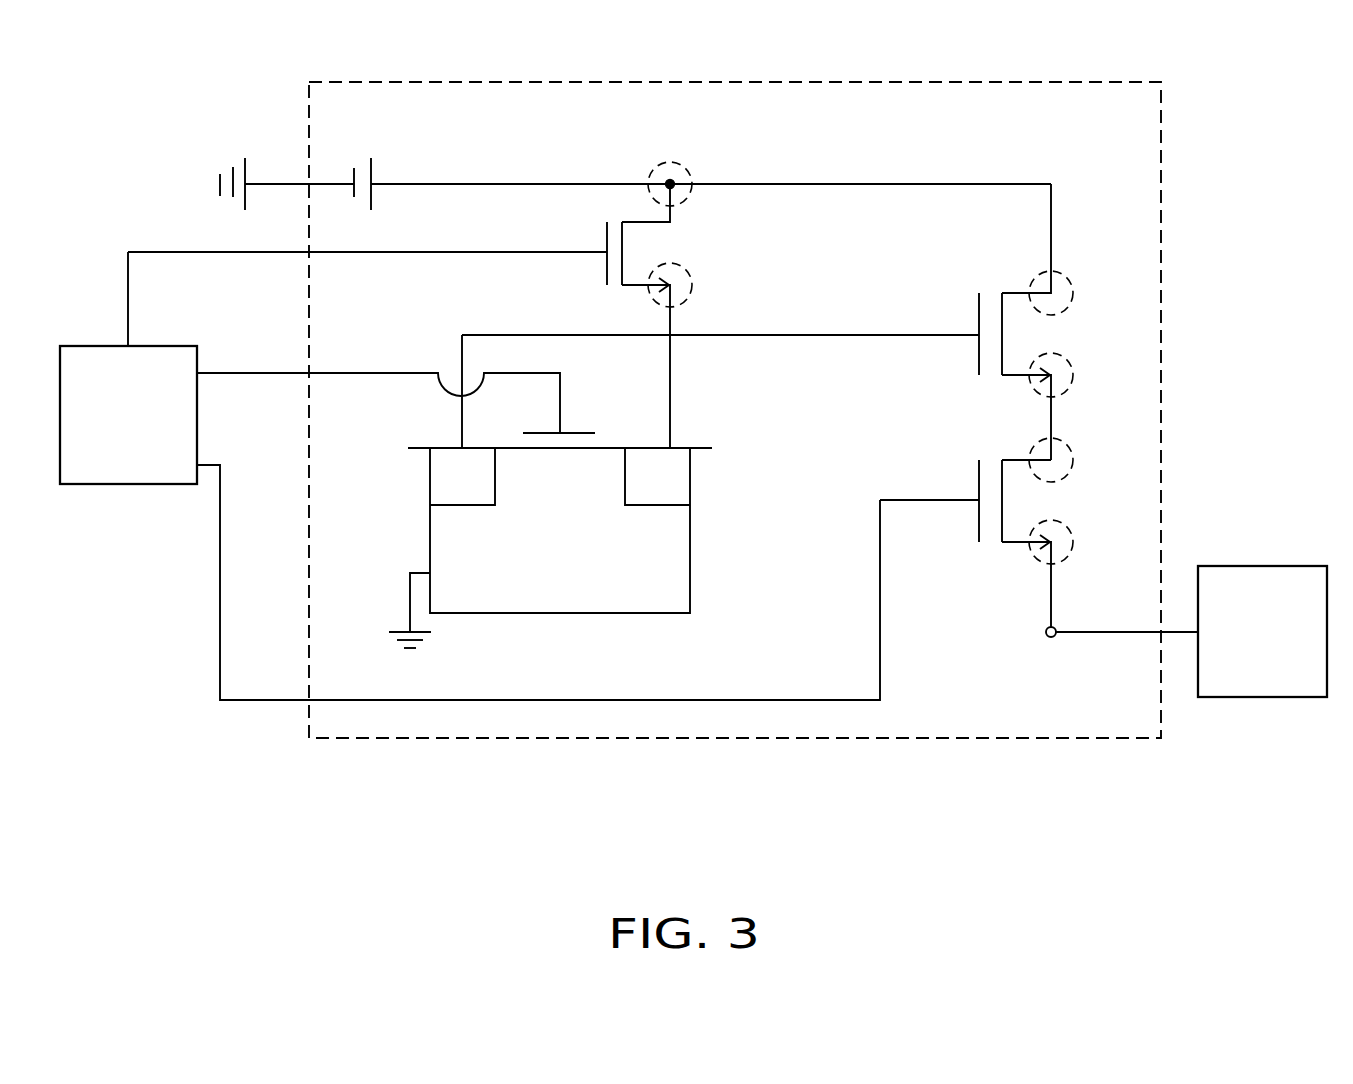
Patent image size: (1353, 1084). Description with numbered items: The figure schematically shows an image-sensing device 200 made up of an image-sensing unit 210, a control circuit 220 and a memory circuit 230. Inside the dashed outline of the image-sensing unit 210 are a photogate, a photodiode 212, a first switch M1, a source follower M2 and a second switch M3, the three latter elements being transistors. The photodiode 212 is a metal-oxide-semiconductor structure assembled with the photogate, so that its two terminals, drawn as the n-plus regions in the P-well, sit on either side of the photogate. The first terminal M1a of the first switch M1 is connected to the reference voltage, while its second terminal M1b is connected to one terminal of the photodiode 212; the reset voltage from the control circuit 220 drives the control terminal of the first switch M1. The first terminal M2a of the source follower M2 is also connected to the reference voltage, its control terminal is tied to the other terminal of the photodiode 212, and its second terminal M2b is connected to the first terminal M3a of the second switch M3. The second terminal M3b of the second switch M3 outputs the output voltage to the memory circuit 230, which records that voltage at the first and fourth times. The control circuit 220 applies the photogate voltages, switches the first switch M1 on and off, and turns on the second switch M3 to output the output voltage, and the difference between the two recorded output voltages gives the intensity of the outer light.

The image-sensing device 200 is at (1186, 825).
The image-sensing unit 210 is at (688, 740).
The photodiode 212 is at (678, 542).
The control circuit 220 is at (122, 487).
The memory circuit 230 is at (1265, 565).
The first switch M1 is at (399, 316).
The first terminal of the first switch M1a is at (686, 170).
The second terminal of the first switch M1b is at (686, 271).
The source follower M2 is at (1015, 322).
The first terminal of the source follower M2a is at (1064, 291).
The second terminal of the source follower M2b is at (1064, 373).
The second switch M3 is at (965, 543).
The first terminal of the second switch M3a is at (1064, 458).
The second terminal of the second switch M3b is at (1064, 540).